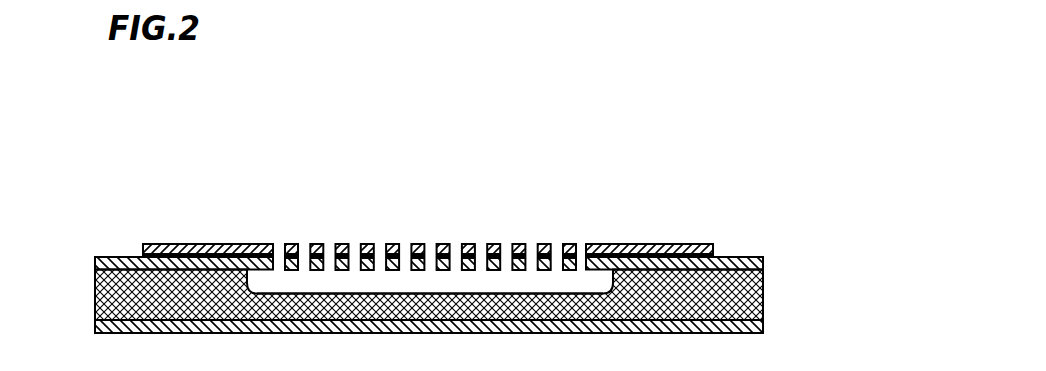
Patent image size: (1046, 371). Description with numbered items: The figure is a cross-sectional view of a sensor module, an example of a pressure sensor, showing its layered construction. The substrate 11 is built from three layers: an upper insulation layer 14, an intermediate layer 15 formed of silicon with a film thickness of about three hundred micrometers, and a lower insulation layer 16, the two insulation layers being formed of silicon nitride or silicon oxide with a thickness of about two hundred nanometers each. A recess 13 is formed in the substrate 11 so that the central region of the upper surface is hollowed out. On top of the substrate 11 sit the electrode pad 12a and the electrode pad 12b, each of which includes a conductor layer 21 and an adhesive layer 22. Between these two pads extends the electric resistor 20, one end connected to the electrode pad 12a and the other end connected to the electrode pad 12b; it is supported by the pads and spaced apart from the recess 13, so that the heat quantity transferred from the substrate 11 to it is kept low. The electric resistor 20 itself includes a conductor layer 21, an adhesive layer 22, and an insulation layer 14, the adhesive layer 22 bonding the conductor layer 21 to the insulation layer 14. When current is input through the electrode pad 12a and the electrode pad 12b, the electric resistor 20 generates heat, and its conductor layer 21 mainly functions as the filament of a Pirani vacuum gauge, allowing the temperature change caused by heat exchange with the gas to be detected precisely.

The substrate 11 is at (475, 251).
The electrode pad 12a is at (737, 180).
The electrode pad 12b is at (200, 178).
The recess 13 is at (528, 293).
The insulation layer 14 is at (467, 200).
The intermediate layer 15 is at (765, 293).
The insulation layer 16 is at (765, 327).
The electric resistor 20 is at (372, 178).
The conductor layer 21 is at (172, 243).
The adhesive layer 22 is at (143, 255).